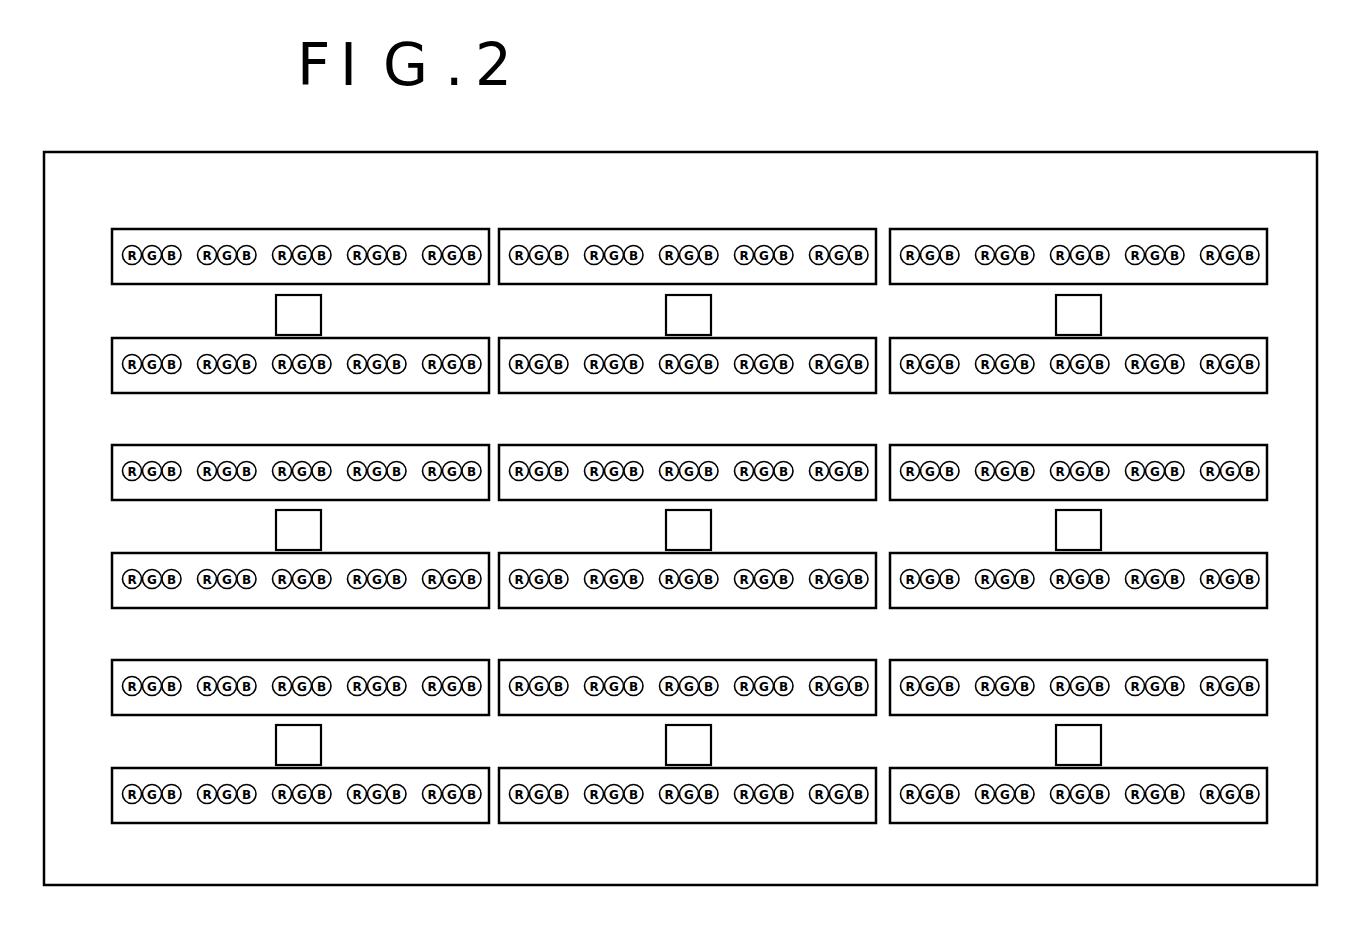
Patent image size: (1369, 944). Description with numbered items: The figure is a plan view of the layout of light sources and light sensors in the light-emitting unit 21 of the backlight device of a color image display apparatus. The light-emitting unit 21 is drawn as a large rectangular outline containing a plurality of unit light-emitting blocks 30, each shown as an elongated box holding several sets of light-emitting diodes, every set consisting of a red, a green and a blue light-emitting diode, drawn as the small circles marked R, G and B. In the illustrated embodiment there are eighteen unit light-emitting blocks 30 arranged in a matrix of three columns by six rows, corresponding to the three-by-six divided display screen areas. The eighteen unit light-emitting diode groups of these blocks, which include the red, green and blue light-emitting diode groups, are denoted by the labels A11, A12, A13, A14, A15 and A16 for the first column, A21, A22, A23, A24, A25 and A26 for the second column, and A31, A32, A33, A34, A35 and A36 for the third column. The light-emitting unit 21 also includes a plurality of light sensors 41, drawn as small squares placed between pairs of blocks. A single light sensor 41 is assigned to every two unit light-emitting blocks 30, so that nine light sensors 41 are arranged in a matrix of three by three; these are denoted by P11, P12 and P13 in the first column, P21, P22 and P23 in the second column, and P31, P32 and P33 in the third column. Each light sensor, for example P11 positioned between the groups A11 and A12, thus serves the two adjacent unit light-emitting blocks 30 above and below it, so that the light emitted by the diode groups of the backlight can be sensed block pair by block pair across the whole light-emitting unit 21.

The light-emitting unit 21 is at (796, 152).
The unit light-emitting block 30 is at (1073, 194).
The light sensor 41 is at (1212, 314).
The unit light-emitting diode group A11 is at (174, 229).
The unit light-emitting diode group A12 is at (174, 338).
The unit light-emitting diode group A13 is at (174, 445).
The unit light-emitting diode group A14 is at (174, 553).
The unit light-emitting diode group A15 is at (174, 660).
The unit light-emitting diode group A16 is at (174, 768).
The unit light-emitting diode group A21 is at (582, 229).
The unit light-emitting diode group A22 is at (582, 338).
The unit light-emitting diode group A23 is at (582, 445).
The unit light-emitting diode group A24 is at (582, 553).
The unit light-emitting diode group A25 is at (582, 660).
The unit light-emitting diode group A26 is at (582, 768).
The unit light-emitting diode group A31 is at (1112, 229).
The unit light-emitting diode group A32 is at (972, 338).
The unit light-emitting diode group A33 is at (972, 445).
The unit light-emitting diode group A34 is at (972, 553).
The unit light-emitting diode group A35 is at (972, 660).
The unit light-emitting diode group A36 is at (972, 768).
The light sensor P11 is at (298, 315).
The light sensor P12 is at (298, 530).
The light sensor P13 is at (298, 745).
The light sensor P21 is at (688, 315).
The light sensor P22 is at (688, 530).
The light sensor P23 is at (688, 745).
The light sensor P31 is at (1078, 315).
The light sensor P32 is at (1078, 530).
The light sensor P33 is at (1078, 745).